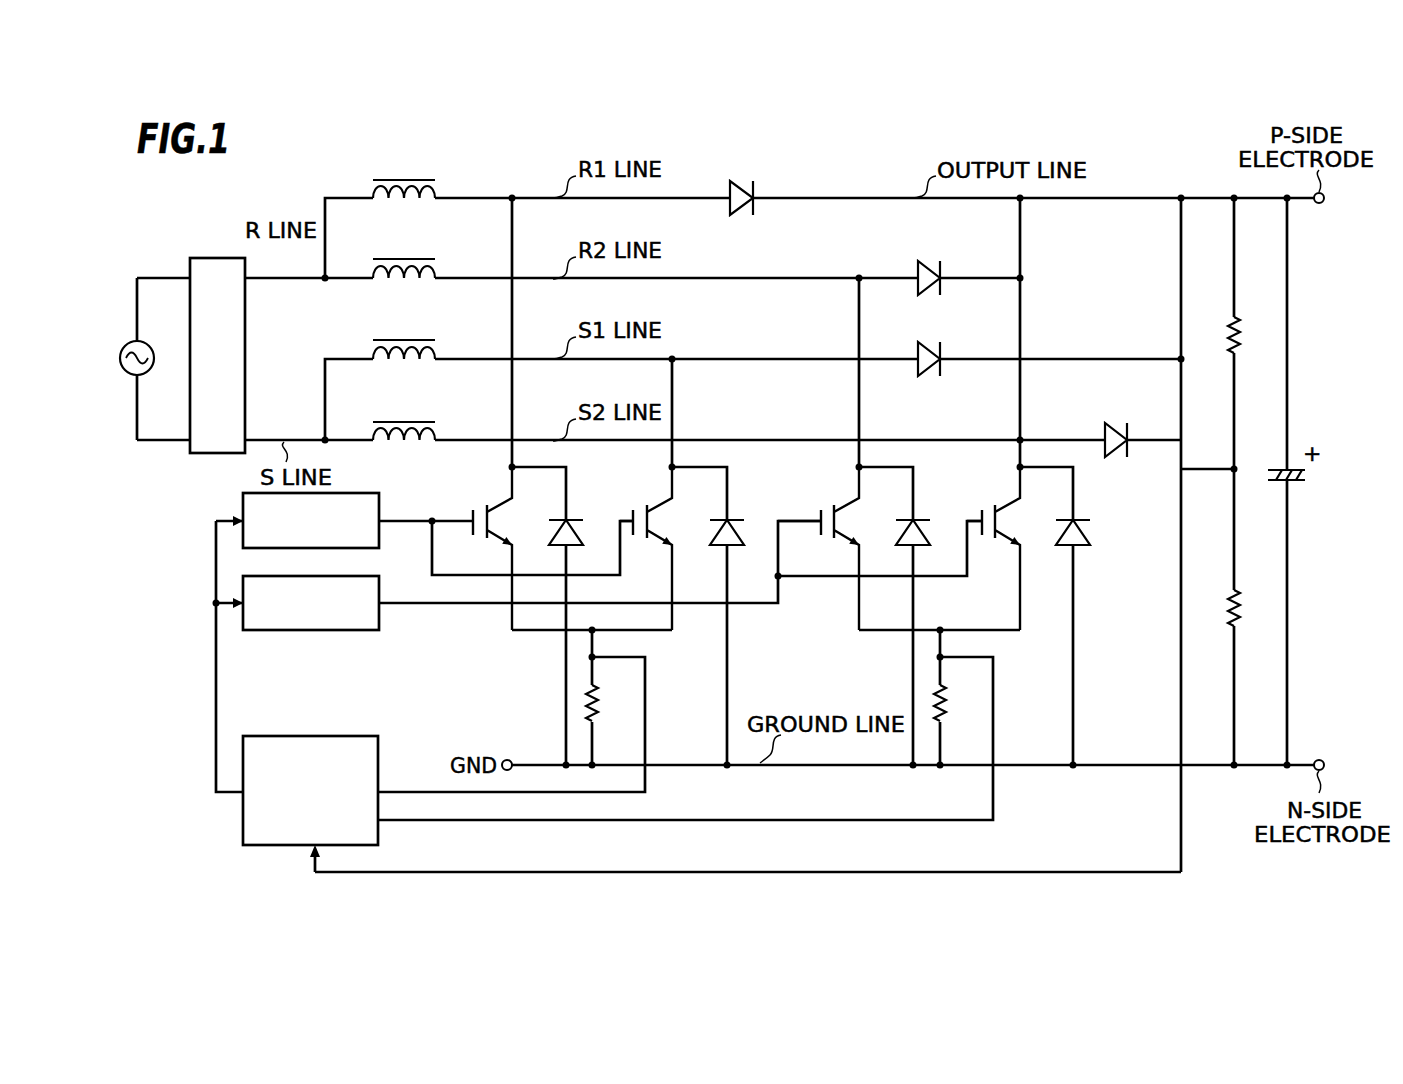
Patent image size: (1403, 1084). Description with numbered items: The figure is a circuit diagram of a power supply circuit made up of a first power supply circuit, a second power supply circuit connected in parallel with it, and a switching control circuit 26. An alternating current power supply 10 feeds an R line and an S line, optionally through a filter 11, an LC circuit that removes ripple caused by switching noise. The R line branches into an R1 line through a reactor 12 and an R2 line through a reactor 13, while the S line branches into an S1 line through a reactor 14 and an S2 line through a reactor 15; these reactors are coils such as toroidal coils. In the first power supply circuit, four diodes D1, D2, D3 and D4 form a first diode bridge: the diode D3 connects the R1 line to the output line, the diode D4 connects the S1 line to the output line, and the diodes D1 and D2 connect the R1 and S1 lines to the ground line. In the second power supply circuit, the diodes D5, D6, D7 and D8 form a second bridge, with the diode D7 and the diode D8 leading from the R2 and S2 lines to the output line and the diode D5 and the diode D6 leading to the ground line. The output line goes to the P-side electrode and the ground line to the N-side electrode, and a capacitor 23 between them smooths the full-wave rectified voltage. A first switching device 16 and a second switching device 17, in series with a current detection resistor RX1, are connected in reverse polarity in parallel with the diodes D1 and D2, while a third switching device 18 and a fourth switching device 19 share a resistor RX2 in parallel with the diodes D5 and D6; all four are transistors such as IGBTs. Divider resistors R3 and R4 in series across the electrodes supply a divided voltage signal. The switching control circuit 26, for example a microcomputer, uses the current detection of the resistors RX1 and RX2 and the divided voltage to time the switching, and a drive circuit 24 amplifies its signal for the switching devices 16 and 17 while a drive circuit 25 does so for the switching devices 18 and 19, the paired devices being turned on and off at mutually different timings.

The alternating current power supply 10 is at (147, 341).
The filter 11 is at (220, 258).
The reactor 12 is at (418, 179).
The reactor 13 is at (418, 259).
The reactor 14 is at (418, 341).
The reactor 15 is at (418, 422).
The first switching device 16 is at (500, 497).
The second switching device 17 is at (660, 497).
The third switching device 18 is at (846, 497).
The fourth switching device 19 is at (1007, 497).
The capacitor 23 is at (1281, 487).
The drive circuit 24 is at (353, 494).
The drive circuit 25 is at (353, 630).
The switching control circuit 26 is at (353, 736).
The diode D1 is at (564, 518).
The diode D2 is at (726, 518).
The diode D3 is at (756, 190).
The diode D4 is at (942, 352).
The diode D5 is at (912, 518).
The diode D6 is at (1073, 518).
The diode D7 is at (942, 268).
The diode D8 is at (1117, 425).
The divider resistor R3 is at (1251, 344).
The divider resistor R4 is at (1252, 616).
The resistor for current detection RX1 is at (614, 703).
The resistor for current detection RX2 is at (962, 703).